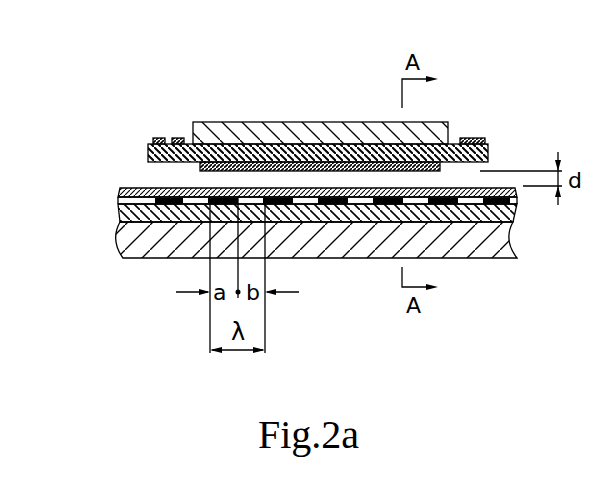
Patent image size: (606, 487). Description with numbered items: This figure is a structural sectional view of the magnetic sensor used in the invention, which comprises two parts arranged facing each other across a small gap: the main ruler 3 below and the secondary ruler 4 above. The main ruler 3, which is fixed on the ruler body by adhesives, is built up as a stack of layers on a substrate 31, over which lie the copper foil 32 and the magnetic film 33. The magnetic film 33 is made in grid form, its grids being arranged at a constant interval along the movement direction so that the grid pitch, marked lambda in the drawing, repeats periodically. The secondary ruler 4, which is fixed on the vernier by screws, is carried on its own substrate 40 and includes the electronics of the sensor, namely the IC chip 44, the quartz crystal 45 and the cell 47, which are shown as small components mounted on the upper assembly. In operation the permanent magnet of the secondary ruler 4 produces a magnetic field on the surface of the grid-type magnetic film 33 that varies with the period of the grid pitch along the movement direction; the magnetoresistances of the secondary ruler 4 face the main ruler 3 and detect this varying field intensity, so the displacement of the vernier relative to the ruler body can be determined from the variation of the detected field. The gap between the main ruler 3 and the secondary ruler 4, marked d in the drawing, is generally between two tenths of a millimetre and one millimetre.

The main ruler 3 is at (518, 197).
The secondary ruler 4 is at (494, 123).
The substrate 31 is at (115, 225).
The copper foil 32 is at (125, 200).
The magnetic film 33 is at (143, 188).
The substrate 40 is at (247, 168).
The IC chip 44 is at (178, 139).
The quartz crystal 45 is at (158, 139).
The cell 47 is at (473, 139).